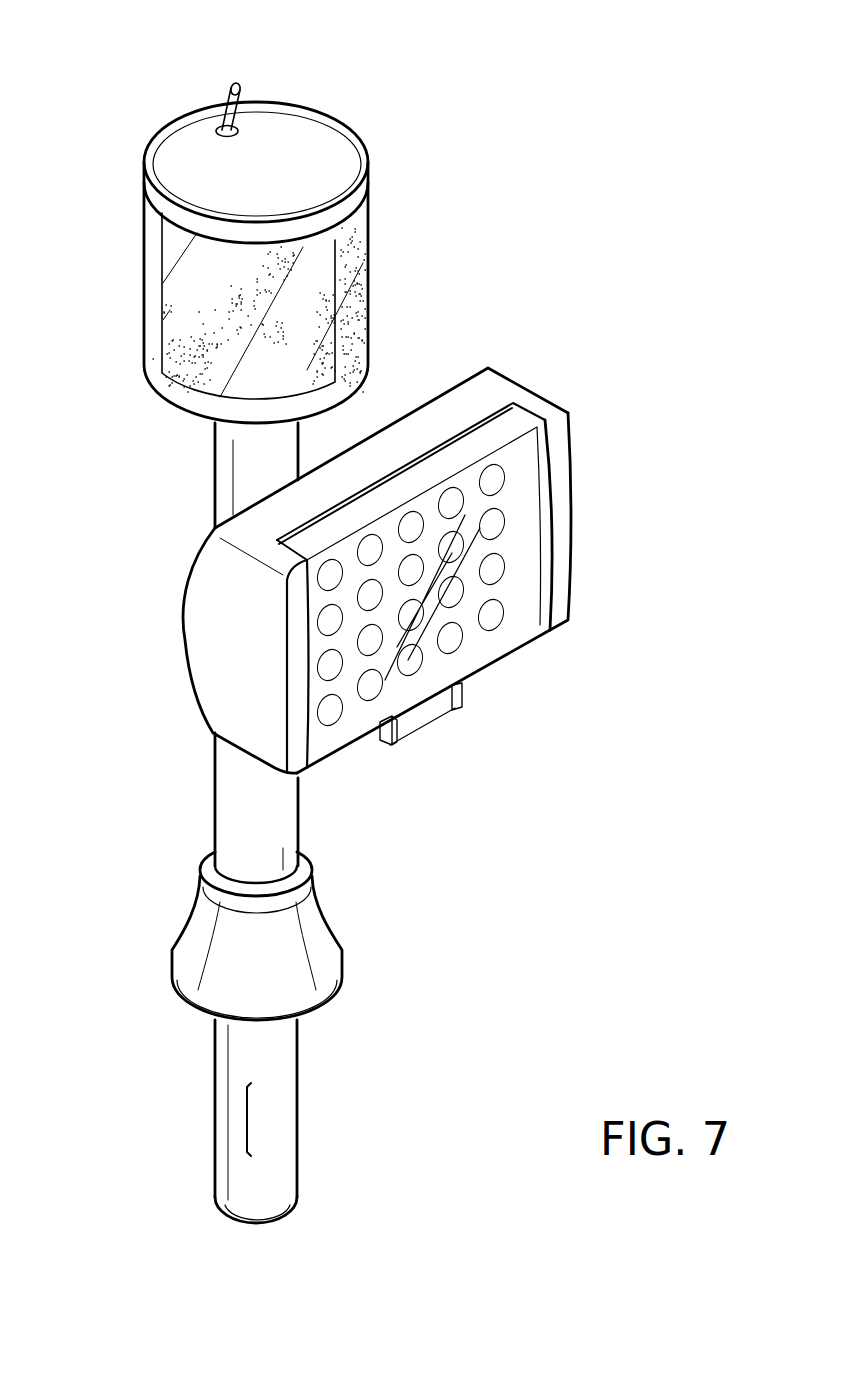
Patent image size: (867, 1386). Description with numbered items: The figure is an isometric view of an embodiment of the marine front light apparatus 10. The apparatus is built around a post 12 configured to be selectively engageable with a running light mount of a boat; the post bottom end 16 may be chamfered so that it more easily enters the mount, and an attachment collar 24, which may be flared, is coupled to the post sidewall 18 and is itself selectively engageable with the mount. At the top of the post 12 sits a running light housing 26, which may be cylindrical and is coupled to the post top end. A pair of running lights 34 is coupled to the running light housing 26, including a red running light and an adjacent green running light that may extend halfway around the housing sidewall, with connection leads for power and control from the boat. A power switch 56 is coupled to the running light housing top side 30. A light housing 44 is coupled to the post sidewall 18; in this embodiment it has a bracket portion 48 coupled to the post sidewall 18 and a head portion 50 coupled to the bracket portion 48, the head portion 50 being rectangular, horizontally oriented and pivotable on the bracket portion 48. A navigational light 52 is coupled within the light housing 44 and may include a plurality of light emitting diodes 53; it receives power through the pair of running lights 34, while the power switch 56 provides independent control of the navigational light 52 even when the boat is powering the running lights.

The marine front light apparatus 10 is at (610, 316).
The post 12 is at (297, 1104).
The post bottom end 16 is at (267, 1223).
The post sidewall 18 is at (247, 1120).
The attachment collar 24 is at (323, 921).
The running light housing 26 is at (147, 376).
The running light housing top side 30 is at (328, 138).
The pair of running lights 34 is at (293, 313).
The light housing 44 is at (247, 592).
The bracket portion 48 is at (383, 748).
The head portion 50 is at (572, 487).
The navigational light 52 is at (526, 541).
The light emitting diodes 53 is at (410, 660).
The power switch 56 is at (217, 128).